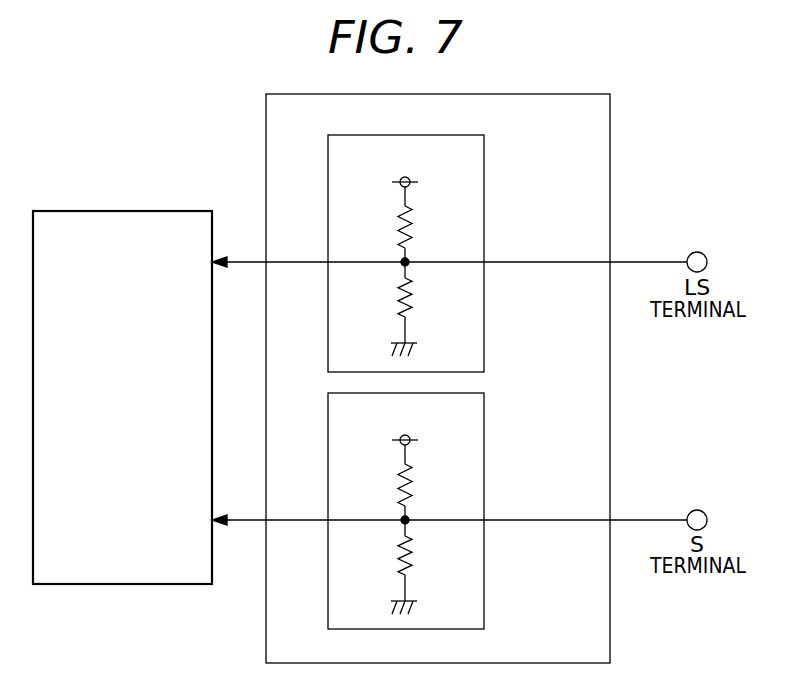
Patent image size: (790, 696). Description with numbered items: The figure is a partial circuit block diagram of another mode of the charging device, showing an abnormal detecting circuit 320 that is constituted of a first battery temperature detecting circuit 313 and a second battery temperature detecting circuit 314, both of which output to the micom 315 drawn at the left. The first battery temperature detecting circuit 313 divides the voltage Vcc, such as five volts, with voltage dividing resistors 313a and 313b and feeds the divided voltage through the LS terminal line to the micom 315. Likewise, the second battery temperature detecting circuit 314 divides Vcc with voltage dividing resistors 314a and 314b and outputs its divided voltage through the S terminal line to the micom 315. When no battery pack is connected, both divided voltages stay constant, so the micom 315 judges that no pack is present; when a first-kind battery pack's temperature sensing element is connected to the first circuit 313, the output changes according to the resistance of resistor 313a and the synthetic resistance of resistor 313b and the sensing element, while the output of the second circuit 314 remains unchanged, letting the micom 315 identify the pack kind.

The abnormal detecting circuit 320 is at (610, 127).
The micom 315 is at (73, 210).
The first battery temperature detecting circuit 313 is at (442, 252).
The voltage dividing resistor 313a is at (412, 221).
The voltage dividing resistor 313b is at (412, 309).
The second battery temperature detecting circuit 314 is at (442, 509).
The voltage dividing resistor 314a is at (412, 479).
The voltage dividing resistor 314b is at (412, 567).